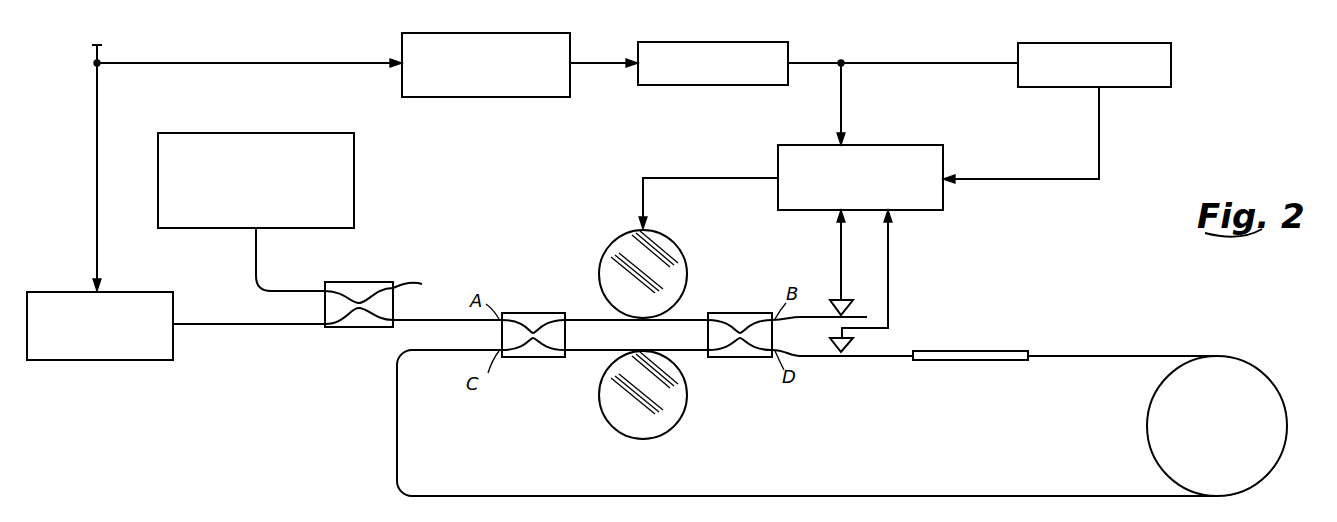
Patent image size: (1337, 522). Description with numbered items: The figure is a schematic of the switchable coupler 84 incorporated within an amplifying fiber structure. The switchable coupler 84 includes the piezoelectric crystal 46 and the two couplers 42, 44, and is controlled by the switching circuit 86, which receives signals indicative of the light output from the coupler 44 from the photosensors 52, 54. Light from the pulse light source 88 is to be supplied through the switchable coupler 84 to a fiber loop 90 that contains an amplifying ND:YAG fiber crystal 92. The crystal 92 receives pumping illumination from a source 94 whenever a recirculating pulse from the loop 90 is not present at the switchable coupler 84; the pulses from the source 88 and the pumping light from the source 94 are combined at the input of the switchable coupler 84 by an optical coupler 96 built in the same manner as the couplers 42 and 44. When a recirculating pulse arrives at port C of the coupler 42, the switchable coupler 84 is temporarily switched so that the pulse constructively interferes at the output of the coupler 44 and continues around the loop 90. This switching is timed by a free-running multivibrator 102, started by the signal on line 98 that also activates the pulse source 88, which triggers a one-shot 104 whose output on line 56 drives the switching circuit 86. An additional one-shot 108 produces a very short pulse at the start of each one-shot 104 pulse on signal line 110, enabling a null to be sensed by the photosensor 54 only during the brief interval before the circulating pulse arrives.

The coupler 42 is at (534, 313).
The coupler 44 is at (735, 313).
The piezoelectric crystal 46 is at (672, 258).
The photosensor 52 is at (835, 298).
The photosensor 54 is at (848, 353).
The line 56 is at (847, 103).
The switchable coupler 84 is at (705, 378).
The switching circuit 86 is at (936, 135).
The pulse light source 88 is at (103, 360).
The fiber loop 90 is at (1147, 437).
The ND:YAG fiber crystal 92 is at (980, 360).
The pumping illumination source 94 is at (354, 174).
The optical coupler 96 is at (376, 282).
The line 98 is at (94, 114).
The free-running multivibrator 102 is at (508, 97).
The one-shot 104 is at (699, 85).
The one-shot 108 is at (1172, 68).
The signal line 110 is at (1037, 181).